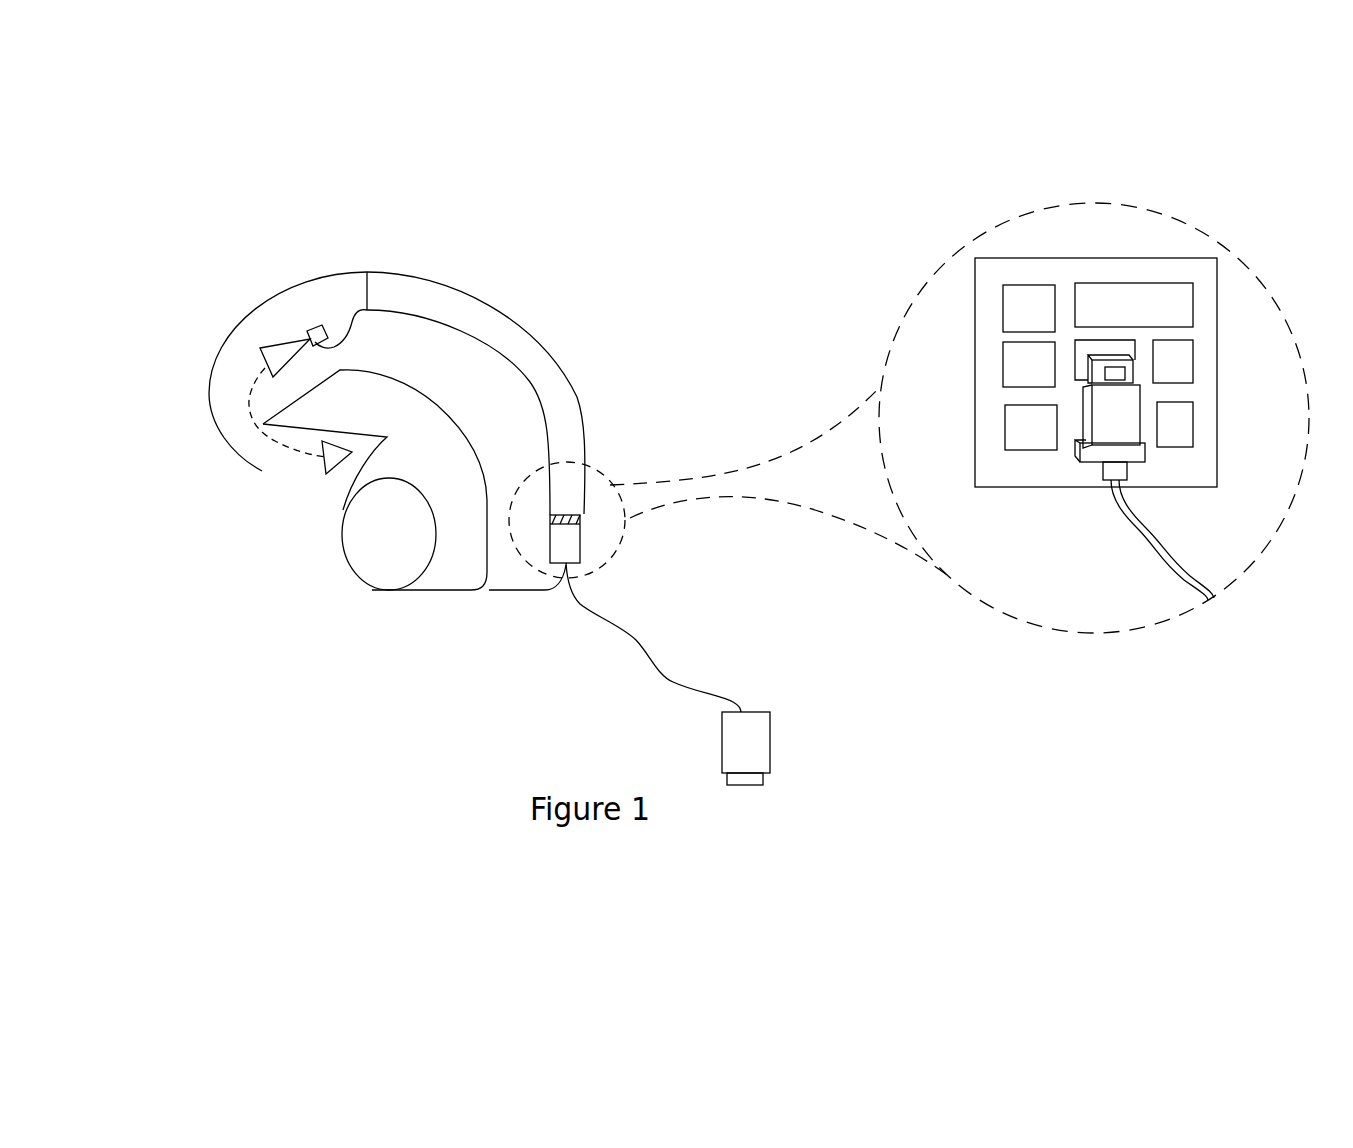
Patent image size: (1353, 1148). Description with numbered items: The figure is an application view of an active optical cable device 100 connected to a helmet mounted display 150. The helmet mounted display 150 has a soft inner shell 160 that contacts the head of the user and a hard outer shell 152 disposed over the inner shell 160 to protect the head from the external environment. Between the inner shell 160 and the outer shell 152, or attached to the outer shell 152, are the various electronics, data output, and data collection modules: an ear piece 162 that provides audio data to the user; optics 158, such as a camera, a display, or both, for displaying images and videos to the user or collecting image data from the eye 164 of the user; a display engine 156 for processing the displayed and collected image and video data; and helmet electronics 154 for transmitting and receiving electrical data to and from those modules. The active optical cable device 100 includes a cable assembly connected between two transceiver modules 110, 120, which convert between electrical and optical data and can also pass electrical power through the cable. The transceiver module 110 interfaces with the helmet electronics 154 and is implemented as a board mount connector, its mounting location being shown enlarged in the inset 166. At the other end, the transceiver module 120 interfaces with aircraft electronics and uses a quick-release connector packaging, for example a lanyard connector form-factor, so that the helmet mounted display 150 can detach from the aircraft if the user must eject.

The active optical cable device 100 is at (702, 662).
The transceiver module 110 is at (570, 555).
The transceiver module 120 is at (770, 747).
The helmet mounted display 150 is at (549, 263).
The outer shell 152 is at (587, 438).
The helmet electronics 154 is at (532, 332).
The display engine 156 is at (272, 373).
The optics 158 is at (235, 411).
The inner shell 160 is at (442, 580).
The ear piece 162 is at (375, 550).
The eye 164 is at (314, 474).
The inset 166 is at (1145, 628).